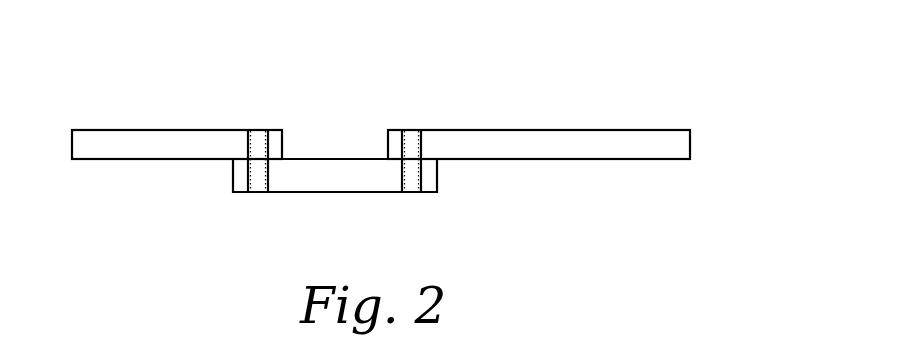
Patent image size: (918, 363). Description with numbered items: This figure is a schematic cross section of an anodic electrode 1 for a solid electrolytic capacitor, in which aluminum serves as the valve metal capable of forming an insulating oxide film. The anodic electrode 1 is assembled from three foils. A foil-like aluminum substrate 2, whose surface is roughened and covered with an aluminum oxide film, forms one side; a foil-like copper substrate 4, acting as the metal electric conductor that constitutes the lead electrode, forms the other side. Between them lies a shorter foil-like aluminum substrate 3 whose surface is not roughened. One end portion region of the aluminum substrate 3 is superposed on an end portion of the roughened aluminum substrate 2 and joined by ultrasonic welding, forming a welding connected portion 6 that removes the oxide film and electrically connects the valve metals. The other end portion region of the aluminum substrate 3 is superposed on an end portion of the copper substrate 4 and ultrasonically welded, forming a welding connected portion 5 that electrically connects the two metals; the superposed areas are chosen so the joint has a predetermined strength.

The anodic electrode 1 is at (740, 140).
The foil-like aluminum substrate 2 is at (547, 143).
The foil-like aluminum substrate 3 is at (332, 165).
The foil-like copper substrate 4 is at (138, 142).
The welding connected portion 5 is at (263, 142).
The welding connected portion 6 is at (413, 142).